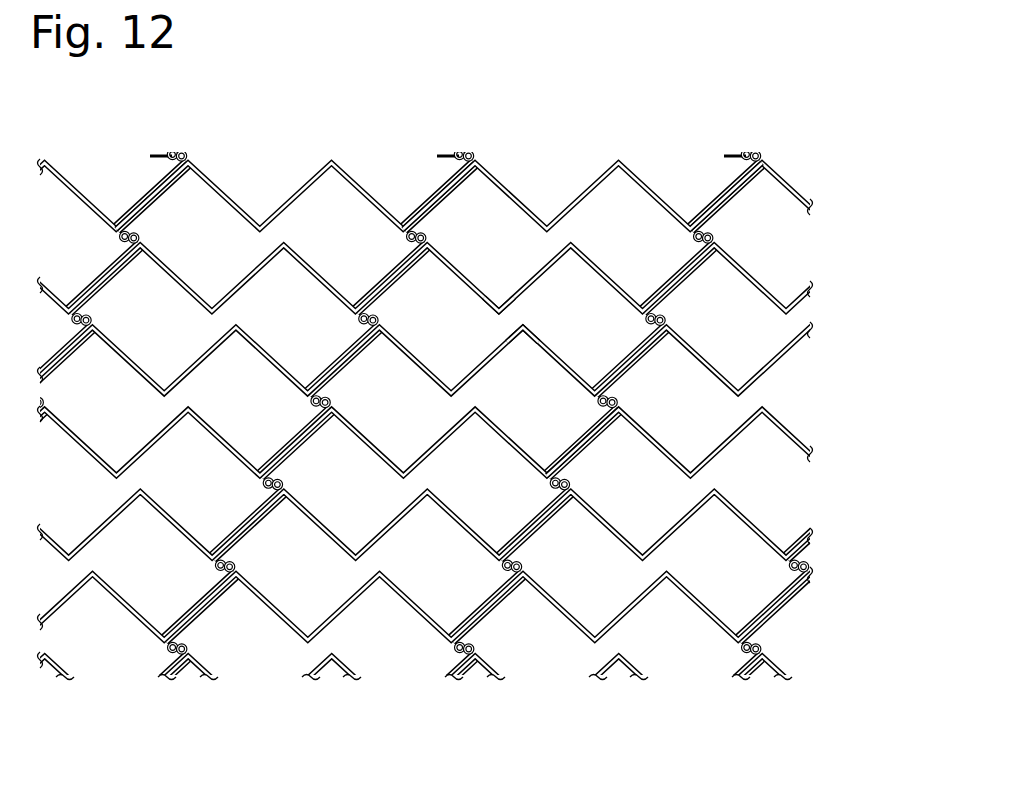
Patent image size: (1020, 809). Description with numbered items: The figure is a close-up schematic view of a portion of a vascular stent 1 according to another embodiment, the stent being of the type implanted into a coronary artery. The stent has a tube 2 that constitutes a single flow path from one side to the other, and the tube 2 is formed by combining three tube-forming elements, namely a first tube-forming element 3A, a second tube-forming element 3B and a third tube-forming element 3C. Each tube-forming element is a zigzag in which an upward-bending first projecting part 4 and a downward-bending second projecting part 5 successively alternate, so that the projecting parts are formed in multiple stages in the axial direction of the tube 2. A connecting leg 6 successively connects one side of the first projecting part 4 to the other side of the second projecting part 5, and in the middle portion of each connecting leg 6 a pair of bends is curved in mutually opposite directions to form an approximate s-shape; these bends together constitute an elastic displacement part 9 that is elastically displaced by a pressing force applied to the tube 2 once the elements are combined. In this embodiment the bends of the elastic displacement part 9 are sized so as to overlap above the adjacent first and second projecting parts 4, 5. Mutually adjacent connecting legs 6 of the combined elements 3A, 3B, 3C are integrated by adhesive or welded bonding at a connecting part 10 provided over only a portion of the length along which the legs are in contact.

The vascular stent 1 is at (710, 138).
The tube 2 is at (285, 625).
The first tube-forming element 3A is at (293, 193).
The second tube-forming element 3B is at (508, 189).
The third tube-forming element 3C is at (662, 452).
The first projecting part 4 is at (528, 323).
The second projecting part 5 is at (500, 313).
The connecting leg 6 is at (388, 292).
The elastic displacement part 9 is at (416, 402).
The connecting part 10 is at (398, 277).